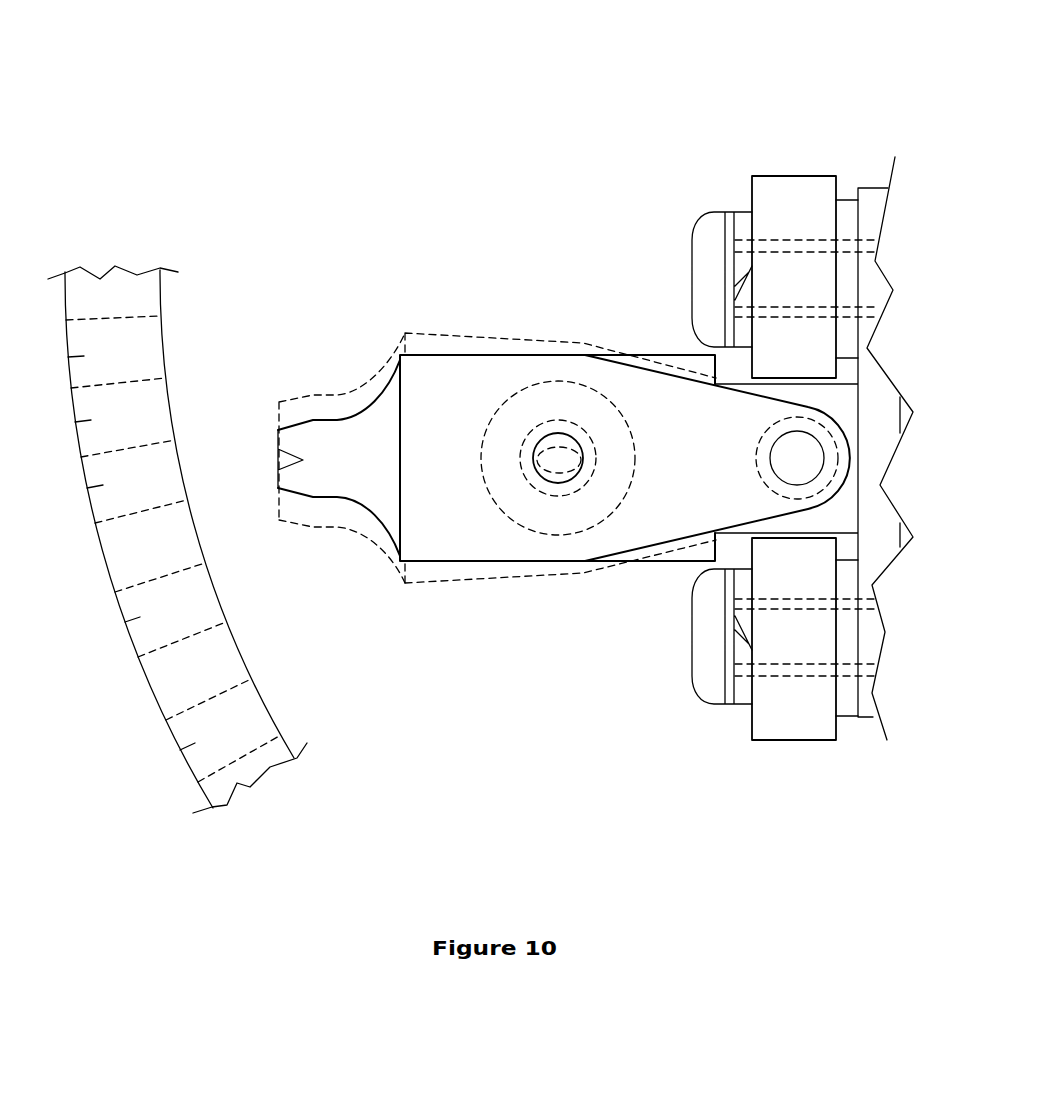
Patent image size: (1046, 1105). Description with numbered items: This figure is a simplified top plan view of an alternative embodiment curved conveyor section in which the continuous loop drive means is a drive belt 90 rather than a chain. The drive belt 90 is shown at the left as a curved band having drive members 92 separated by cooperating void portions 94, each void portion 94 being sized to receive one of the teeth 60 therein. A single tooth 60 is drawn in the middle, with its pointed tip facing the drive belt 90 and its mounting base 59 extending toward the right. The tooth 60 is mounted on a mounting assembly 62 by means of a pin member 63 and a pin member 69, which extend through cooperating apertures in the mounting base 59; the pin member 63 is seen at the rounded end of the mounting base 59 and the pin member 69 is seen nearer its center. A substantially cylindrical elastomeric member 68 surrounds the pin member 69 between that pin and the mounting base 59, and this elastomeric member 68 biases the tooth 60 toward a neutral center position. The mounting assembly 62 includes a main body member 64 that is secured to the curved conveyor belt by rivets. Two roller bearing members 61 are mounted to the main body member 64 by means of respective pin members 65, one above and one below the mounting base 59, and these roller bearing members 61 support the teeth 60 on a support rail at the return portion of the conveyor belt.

The mounting base 59 is at (633, 525).
The tooth 60 is at (349, 490).
The roller bearing member 61 is at (785, 200).
The mounting assembly 62 is at (723, 122).
The pin member 63 is at (788, 467).
The main body member 64 is at (689, 368).
The pin member 65 is at (710, 242).
The elastomeric member 68 is at (615, 447).
The pin member 69 is at (570, 448).
The drive belt 90 is at (75, 424).
The drive member 92 is at (147, 319).
The void portion 94 is at (70, 359).